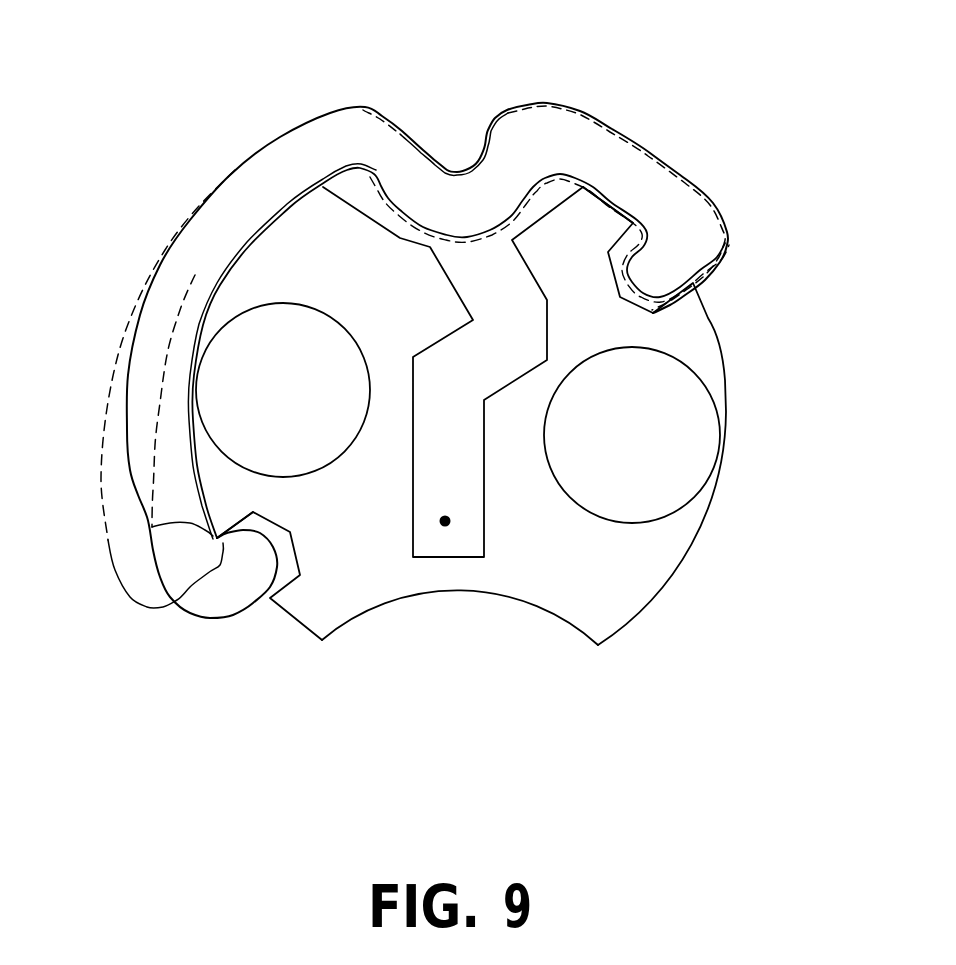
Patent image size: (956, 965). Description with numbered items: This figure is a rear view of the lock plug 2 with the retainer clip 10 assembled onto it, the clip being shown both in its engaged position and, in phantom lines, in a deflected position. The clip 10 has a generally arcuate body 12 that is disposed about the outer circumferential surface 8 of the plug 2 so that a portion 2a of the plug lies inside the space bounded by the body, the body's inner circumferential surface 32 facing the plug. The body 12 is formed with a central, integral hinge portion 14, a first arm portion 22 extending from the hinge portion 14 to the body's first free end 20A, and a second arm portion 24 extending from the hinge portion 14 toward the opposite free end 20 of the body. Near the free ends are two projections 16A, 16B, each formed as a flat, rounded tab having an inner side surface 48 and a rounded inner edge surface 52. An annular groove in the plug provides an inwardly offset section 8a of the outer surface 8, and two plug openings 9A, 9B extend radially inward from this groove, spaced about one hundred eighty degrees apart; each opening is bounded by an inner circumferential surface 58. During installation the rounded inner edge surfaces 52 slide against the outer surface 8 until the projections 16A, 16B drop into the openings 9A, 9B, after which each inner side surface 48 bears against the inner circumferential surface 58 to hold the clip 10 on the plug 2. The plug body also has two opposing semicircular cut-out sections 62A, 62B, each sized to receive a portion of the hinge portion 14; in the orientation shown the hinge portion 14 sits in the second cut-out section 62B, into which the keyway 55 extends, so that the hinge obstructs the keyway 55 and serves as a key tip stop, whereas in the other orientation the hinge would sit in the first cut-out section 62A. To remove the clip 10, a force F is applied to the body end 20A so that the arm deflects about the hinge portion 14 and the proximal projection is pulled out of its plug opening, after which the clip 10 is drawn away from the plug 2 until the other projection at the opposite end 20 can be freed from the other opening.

The lock plug 2 is at (676, 590).
The portion of the plug 2a is at (310, 242).
The outer circumferential surface 8 is at (700, 548).
The inwardly offset section 8a is at (195, 485).
The plug opening 9A is at (606, 248).
The plug opening 9B is at (316, 562).
The retainer clip 10 is at (222, 92).
The arcuate body 12 is at (712, 194).
The hinge portion 14 is at (428, 142).
The projection 16A is at (255, 572).
The projection 16B is at (657, 275).
The hook 20 is at (703, 253).
The first free end 20A is at (224, 590).
The first arm portion 22 is at (172, 282).
The second arm portion 24 is at (620, 163).
The inner circumferential surface 32 is at (240, 253).
The inner side surface 48 is at (630, 207).
The rounded inner edge surface 52 is at (220, 530).
The keyway 55 is at (447, 521).
The inner circumferential surface 58 is at (640, 307).
The first cut-out section 62A is at (483, 590).
The second cut-out section 62B is at (560, 207).
The force F is at (205, 576).